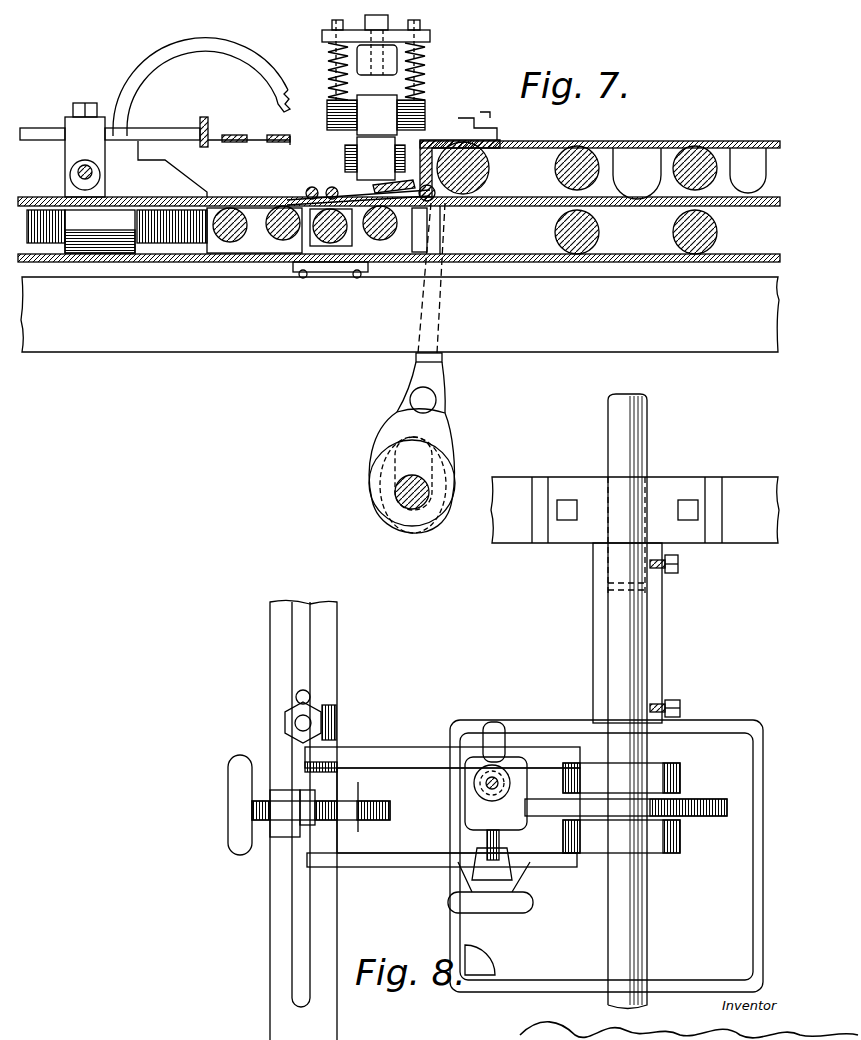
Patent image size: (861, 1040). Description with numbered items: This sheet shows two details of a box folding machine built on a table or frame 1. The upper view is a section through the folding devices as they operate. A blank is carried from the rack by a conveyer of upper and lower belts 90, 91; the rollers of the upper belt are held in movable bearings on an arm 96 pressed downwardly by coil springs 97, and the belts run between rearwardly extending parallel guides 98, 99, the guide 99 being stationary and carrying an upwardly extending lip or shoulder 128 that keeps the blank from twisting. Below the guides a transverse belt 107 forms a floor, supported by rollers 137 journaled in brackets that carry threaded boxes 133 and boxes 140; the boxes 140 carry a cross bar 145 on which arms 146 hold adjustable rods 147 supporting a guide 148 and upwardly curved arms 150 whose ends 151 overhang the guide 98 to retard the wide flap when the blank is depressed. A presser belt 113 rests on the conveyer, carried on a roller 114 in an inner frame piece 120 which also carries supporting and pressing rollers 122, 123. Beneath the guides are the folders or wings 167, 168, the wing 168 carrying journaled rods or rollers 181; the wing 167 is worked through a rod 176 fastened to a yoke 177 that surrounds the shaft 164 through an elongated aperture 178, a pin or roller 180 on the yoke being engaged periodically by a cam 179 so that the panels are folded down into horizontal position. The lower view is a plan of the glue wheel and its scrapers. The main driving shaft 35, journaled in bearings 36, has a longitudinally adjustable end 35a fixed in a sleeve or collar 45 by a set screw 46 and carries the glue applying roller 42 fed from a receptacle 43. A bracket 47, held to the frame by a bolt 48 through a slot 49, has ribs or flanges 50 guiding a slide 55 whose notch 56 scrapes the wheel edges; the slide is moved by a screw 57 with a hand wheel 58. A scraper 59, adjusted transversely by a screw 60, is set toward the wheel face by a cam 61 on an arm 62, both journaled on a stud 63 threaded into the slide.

In FIG. 7, the frame 1 is at (400, 314).
In FIG. 8, the frame 1 is at (303, 820).
In FIG. 8, the main driving shaft 35 is at (612, 427).
In FIG. 8, the longitudinally adjustable end 35a is at (642, 932).
In FIG. 8, the bearings 36 is at (673, 483).
In FIG. 8, the glue applying roller 42 is at (713, 817).
In FIG. 8, the receptacle 43 is at (537, 988).
In FIG. 8, the sleeve or collar 45 is at (662, 650).
In FIG. 8, the set screw 46 is at (678, 707).
In FIG. 8, the bracket 47 is at (304, 767).
In FIG. 8, the bolt 48 is at (302, 723).
In FIG. 8, the slot 49 is at (302, 690).
In FIG. 8, the ribs or flanges 50 is at (398, 748).
In FIG. 8, the slide 55 is at (338, 806).
In FIG. 8, the notch 56 is at (545, 815).
In FIG. 8, the screw 57 is at (375, 812).
In FIG. 8, the hand wheel 58 is at (238, 823).
In FIG. 8, the scraper 59 is at (472, 820).
In FIG. 8, the screw 60 is at (480, 835).
In FIG. 8, the cam 61 is at (467, 787).
In FIG. 8, the arm 62 is at (490, 733).
In FIG. 8, the stud 63 is at (500, 783).
In FIG. 7, the upper belt 90 is at (376, 115).
In FIG. 7, the lower belt 91 is at (375, 158).
In FIG. 7, the arm 96 is at (390, 60).
In FIG. 7, the coil springs 97 is at (426, 78).
In FIG. 7, the guide 98 is at (278, 141).
In FIG. 7, the guide 99 is at (428, 140).
In FIG. 7, the belt 107 is at (572, 262).
In FIG. 7, the presser belt 113 is at (748, 141).
In FIG. 7, the roller 114 is at (478, 157).
In FIG. 7, the inner frame piece 120 is at (668, 150).
In FIG. 7, the supporting rollers 122 is at (594, 233).
In FIG. 7, the pressing rollers 123 is at (585, 148).
In FIG. 7, the lip or shoulder 128 is at (472, 122).
In FIG. 7, the threaded box 133 is at (307, 246).
In FIG. 7, the rollers 137 is at (272, 241).
In FIG. 7, the boxes 140 is at (118, 222).
In FIG. 7, the cross bar 145 is at (93, 172).
In FIG. 7, the arms 146 is at (77, 148).
In FIG. 7, the rods 147 is at (151, 133).
In FIG. 7, the guide 148 is at (207, 125).
In FIG. 7, the arms 150 is at (114, 126).
In FIG. 7, the ends 151 is at (283, 86).
In FIG. 7, the shaft 164 is at (422, 493).
In FIG. 7, the folder or wing 167 is at (414, 240).
In FIG. 7, the folder or wing 168 is at (335, 183).
In FIG. 7, the rod 176 is at (437, 296).
In FIG. 7, the yoke 177 is at (443, 406).
In FIG. 7, the elongated aperture 178 is at (430, 441).
In FIG. 7, the cam 179 is at (378, 429).
In FIG. 7, the pin or roller 180 is at (421, 401).
In FIG. 7, the rods or rollers 181 is at (309, 188).